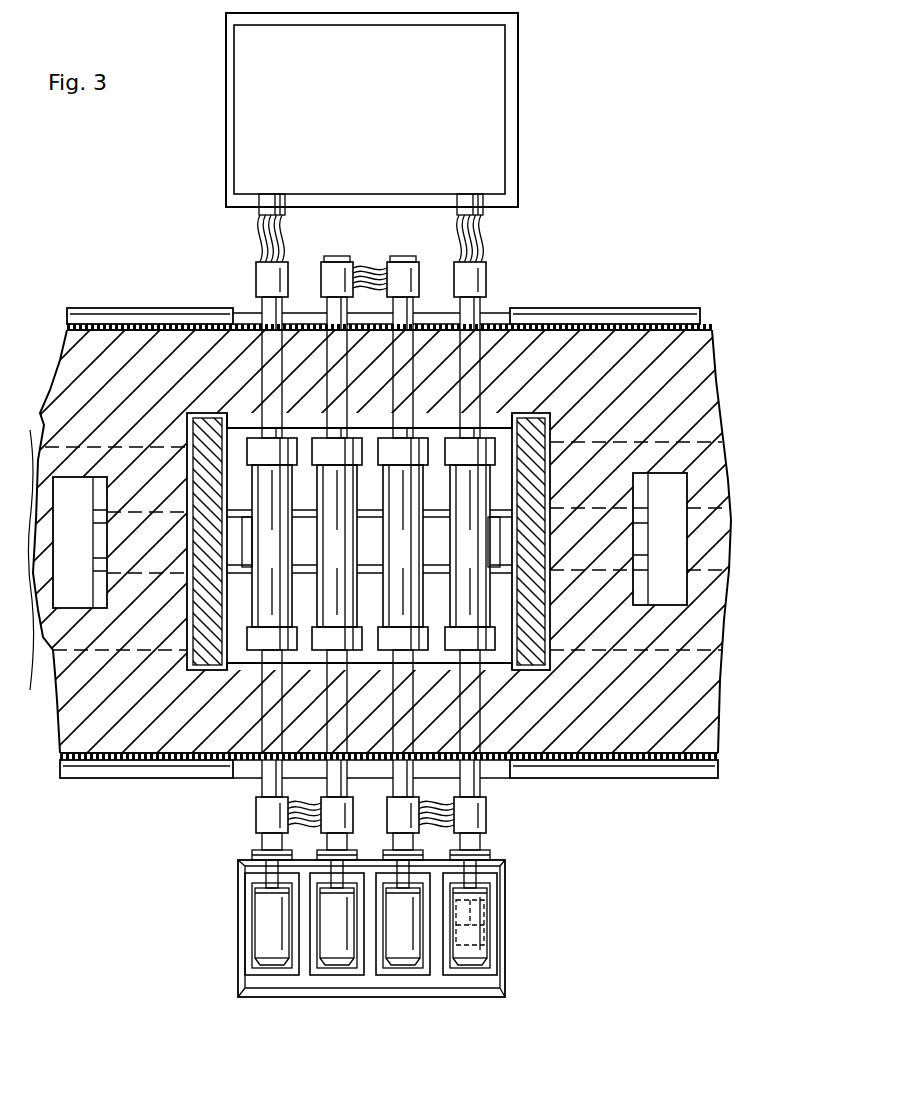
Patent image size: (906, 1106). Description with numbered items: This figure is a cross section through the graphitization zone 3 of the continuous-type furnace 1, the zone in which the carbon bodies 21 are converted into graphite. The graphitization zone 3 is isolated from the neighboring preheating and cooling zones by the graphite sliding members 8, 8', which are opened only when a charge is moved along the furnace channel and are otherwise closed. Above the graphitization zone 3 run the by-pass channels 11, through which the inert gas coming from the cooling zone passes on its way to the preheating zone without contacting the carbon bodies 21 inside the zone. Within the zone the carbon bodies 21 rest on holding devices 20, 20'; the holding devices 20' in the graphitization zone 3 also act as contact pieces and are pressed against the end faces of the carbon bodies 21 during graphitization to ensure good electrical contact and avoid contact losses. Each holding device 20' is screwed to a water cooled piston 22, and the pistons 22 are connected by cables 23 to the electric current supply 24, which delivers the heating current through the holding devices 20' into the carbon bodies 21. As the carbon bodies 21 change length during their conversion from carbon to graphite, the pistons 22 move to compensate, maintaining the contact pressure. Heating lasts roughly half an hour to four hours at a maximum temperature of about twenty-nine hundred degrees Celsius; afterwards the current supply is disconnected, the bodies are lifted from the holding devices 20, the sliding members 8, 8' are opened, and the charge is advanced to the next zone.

The continuous-type furnace 1 is at (49, 645).
The graphitization zone 3 is at (246, 616).
The graphite sliding member 8 is at (522, 541).
The graphite sliding member 8' is at (201, 520).
The by-pass channel 11 is at (102, 493).
The holding device 20 is at (261, 472).
The holding device 20' is at (374, 542).
The carbon body 21 is at (286, 563).
The water cooled piston 22 is at (262, 305).
The cable 23 is at (262, 243).
The electric current supply 24 is at (493, 45).